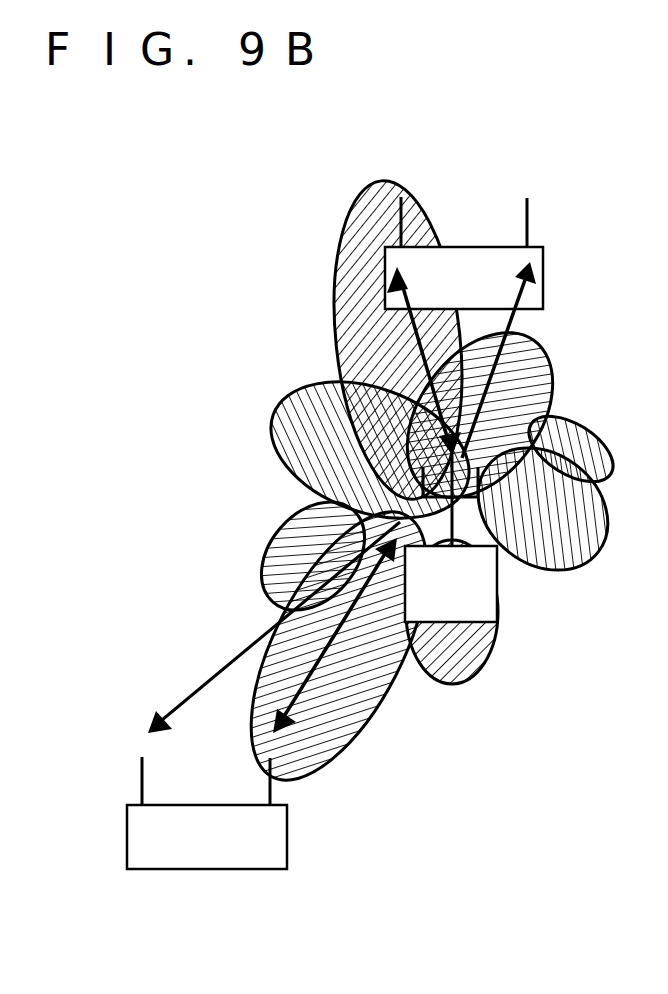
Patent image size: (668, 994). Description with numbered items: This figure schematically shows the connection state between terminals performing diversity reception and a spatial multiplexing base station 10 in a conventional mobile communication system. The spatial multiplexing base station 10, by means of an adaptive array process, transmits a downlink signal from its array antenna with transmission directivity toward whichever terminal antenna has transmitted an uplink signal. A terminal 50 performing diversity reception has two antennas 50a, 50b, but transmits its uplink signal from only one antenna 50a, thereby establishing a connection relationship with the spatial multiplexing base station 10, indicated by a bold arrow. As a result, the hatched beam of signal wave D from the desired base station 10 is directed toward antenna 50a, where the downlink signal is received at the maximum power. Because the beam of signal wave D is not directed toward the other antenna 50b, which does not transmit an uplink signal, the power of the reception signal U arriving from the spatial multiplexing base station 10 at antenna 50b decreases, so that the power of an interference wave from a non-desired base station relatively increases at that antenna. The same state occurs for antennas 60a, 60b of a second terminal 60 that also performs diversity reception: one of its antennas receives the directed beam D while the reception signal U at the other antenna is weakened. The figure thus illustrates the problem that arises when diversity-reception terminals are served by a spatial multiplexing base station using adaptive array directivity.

The spatial multiplexing base station 10 is at (473, 592).
The terminal 50 is at (545, 255).
The antenna 50a is at (402, 212).
The antenna 50b is at (528, 212).
The terminal 60 is at (270, 845).
The antenna 60a is at (273, 795).
The antenna 60b is at (137, 767).
The beam of signal wave D is at (333, 268).
The reception signal U is at (513, 318).